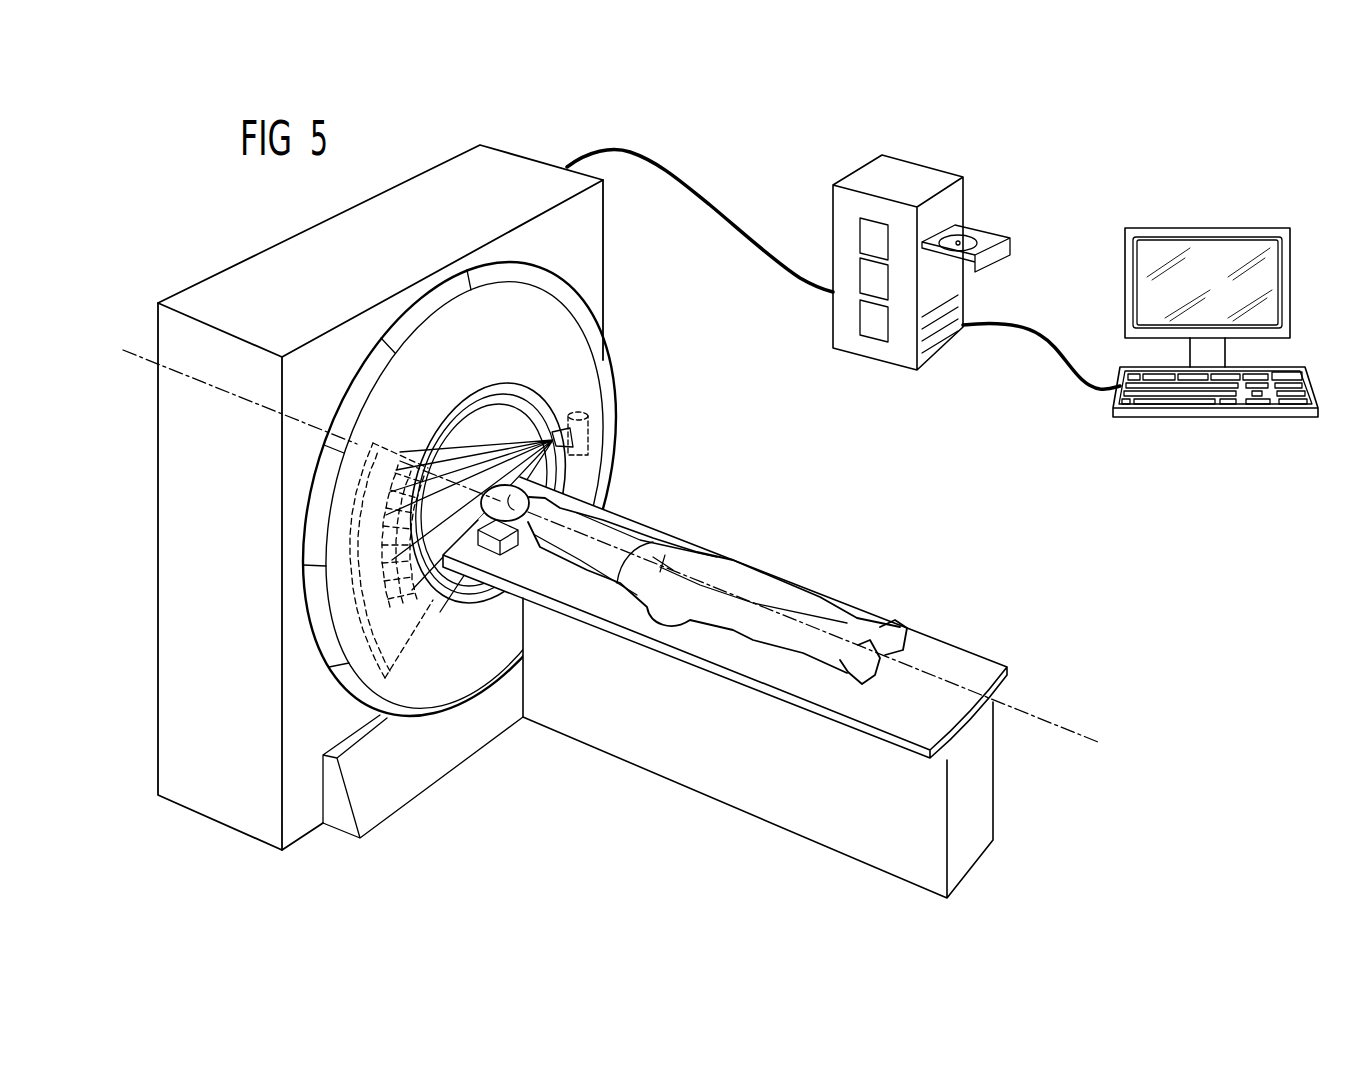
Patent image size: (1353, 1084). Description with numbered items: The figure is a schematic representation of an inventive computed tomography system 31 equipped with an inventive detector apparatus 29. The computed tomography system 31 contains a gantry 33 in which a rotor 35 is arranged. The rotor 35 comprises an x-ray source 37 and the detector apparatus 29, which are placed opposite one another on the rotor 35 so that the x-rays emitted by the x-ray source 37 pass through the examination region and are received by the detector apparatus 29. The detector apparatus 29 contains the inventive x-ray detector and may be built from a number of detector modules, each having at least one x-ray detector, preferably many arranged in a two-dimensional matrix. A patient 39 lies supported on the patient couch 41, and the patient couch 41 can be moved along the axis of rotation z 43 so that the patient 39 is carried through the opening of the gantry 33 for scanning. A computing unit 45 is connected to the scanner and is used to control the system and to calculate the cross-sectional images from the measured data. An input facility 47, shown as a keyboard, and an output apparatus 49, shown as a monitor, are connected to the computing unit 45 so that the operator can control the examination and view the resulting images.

The detector apparatus 29 is at (400, 653).
The computed tomography system 31 is at (151, 633).
The gantry 33 is at (250, 246).
The rotor 35 is at (598, 357).
The x-ray source 37 is at (592, 436).
The patient 39 is at (773, 597).
The patient couch 41 is at (818, 827).
The axis of rotation z 43 is at (152, 361).
The computing unit 45 is at (915, 173).
The input facility 47 is at (1120, 402).
The output apparatus 49 is at (1128, 288).